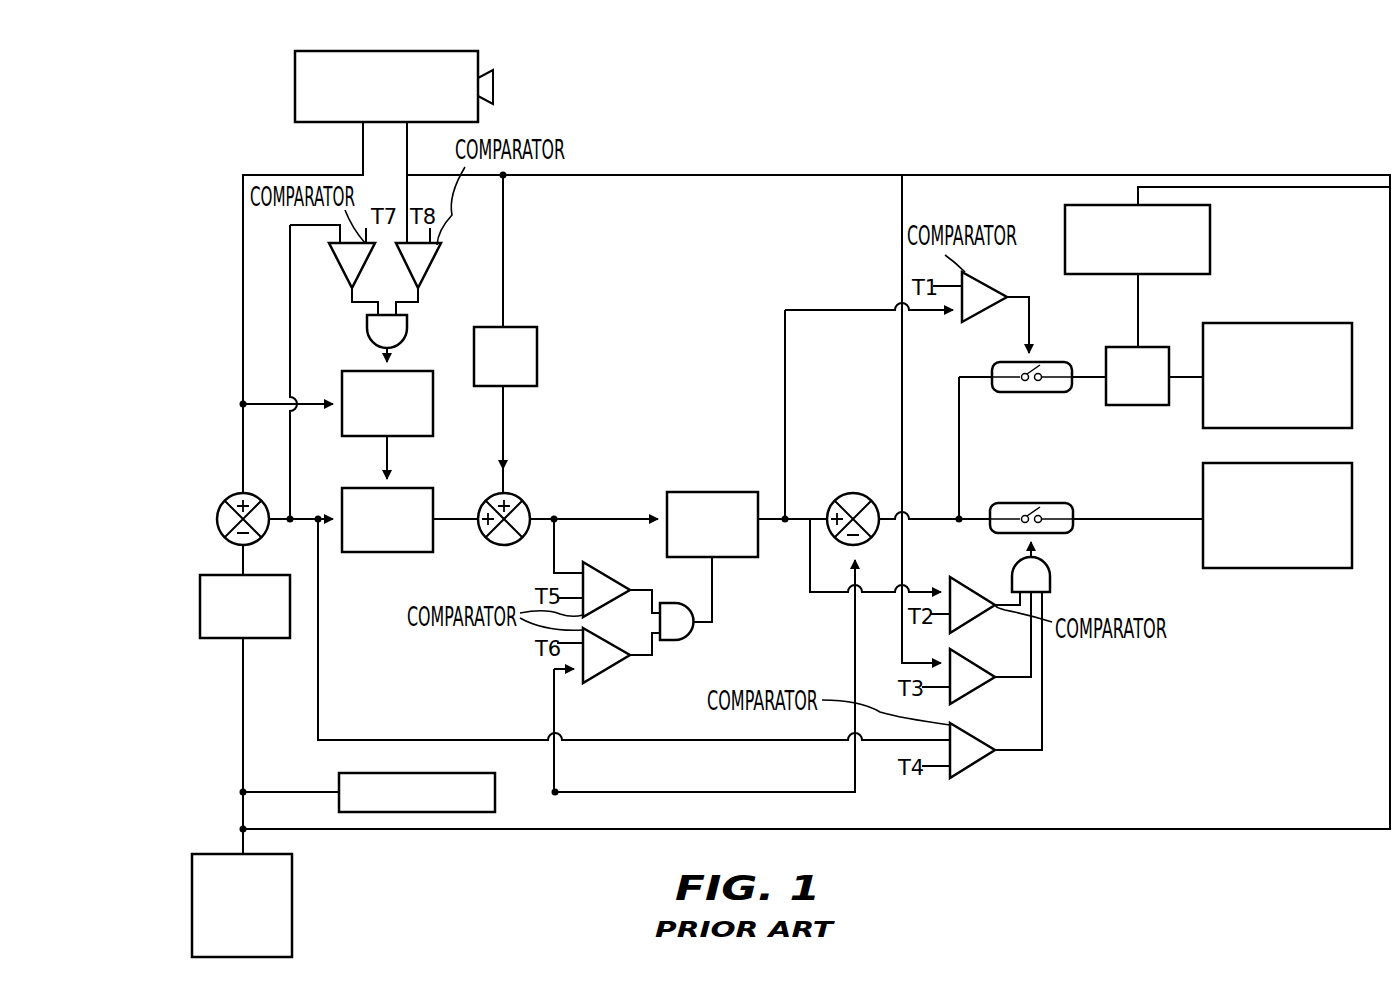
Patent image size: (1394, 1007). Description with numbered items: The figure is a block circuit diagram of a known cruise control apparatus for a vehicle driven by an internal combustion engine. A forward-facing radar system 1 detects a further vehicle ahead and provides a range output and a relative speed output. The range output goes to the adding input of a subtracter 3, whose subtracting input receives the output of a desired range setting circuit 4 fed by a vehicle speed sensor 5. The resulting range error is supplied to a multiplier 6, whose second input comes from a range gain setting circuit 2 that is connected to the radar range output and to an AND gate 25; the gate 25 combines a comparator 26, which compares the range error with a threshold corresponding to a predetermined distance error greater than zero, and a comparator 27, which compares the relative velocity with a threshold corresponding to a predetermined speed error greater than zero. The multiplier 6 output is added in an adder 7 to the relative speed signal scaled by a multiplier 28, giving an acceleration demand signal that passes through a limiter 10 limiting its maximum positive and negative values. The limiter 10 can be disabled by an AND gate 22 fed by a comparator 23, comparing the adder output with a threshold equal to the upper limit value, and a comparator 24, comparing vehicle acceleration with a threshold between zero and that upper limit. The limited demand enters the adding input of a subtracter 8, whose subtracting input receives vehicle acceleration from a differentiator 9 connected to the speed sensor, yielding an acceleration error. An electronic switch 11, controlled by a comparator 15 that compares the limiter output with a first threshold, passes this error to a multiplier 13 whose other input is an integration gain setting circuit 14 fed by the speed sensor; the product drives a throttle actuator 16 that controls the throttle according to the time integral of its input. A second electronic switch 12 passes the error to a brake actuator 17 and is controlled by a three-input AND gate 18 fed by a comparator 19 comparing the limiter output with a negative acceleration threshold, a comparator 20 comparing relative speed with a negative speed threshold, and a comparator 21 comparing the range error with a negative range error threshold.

The radar system 1 is at (295, 93).
The range gain setting circuit 2 is at (340, 422).
The subtracter 3 is at (250, 494).
The desired range setting circuit 4 is at (232, 640).
The vehicle speed sensor 5 is at (292, 908).
The multiplier 6 is at (420, 488).
The adder 7 is at (530, 503).
The subtracter 8 is at (862, 497).
The differentiator 9 is at (495, 803).
The limiter 10 is at (690, 492).
The electronic switch 11 is at (1026, 393).
The electronic switch 12 is at (1030, 503).
The multiplier 13 is at (1137, 405).
The integration gain setting circuit 14 is at (1212, 242).
The comparator 15 is at (1000, 290).
The throttle actuator 16 is at (1290, 323).
The brake actuator 17 is at (1272, 570).
The AND gate 18 is at (1055, 572).
The comparator 19 is at (975, 623).
The comparator 20 is at (975, 695).
The comparator 21 is at (980, 765).
The AND gate 22 is at (690, 638).
The comparator 23 is at (603, 568).
The comparator 24 is at (610, 672).
The AND gate 25 is at (410, 330).
The comparator 26 is at (345, 283).
The comparator 27 is at (430, 272).
The multiplier 28 is at (537, 357).